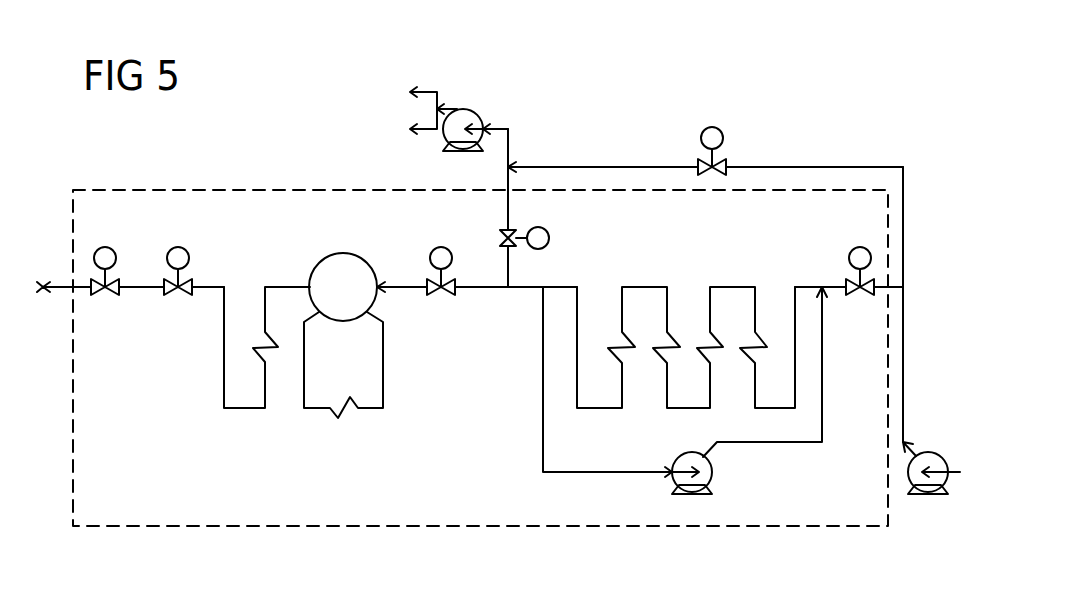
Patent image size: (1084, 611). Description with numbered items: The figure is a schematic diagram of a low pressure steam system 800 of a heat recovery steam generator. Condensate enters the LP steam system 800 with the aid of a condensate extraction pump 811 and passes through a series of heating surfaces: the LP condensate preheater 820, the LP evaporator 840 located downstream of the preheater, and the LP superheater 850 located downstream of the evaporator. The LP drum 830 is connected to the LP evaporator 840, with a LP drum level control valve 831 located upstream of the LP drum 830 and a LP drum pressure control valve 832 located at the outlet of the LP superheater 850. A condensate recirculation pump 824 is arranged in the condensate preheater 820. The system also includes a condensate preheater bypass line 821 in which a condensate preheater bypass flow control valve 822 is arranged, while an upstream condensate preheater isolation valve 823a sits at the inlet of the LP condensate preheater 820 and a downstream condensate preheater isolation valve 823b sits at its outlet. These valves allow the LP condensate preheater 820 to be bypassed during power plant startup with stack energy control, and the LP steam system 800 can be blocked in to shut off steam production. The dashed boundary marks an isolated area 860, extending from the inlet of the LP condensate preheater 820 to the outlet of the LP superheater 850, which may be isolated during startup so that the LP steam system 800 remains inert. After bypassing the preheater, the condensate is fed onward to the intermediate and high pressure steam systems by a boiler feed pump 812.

The LP steam system 800 is at (809, 62).
The condensate extraction pump 811 is at (932, 452).
The boiler feed pump 812 is at (465, 109).
The LP condensate preheater 820 is at (699, 271).
The condensate preheater bypass line 821 is at (603, 166).
The condensate preheater bypass flow control valve 822 is at (718, 128).
The upstream condensate preheater isolation valve 823a is at (860, 247).
The downstream condensate preheater isolation valve 823b is at (548, 233).
The condensate recirculation pump 824 is at (712, 466).
The LP drum 830 is at (345, 253).
The LP drum level control valve 831 is at (441, 247).
The LP drum pressure control valve 832 is at (178, 247).
The LP evaporator 840 is at (328, 432).
The LP superheater 850 is at (248, 432).
The isolated area 860 is at (271, 179).